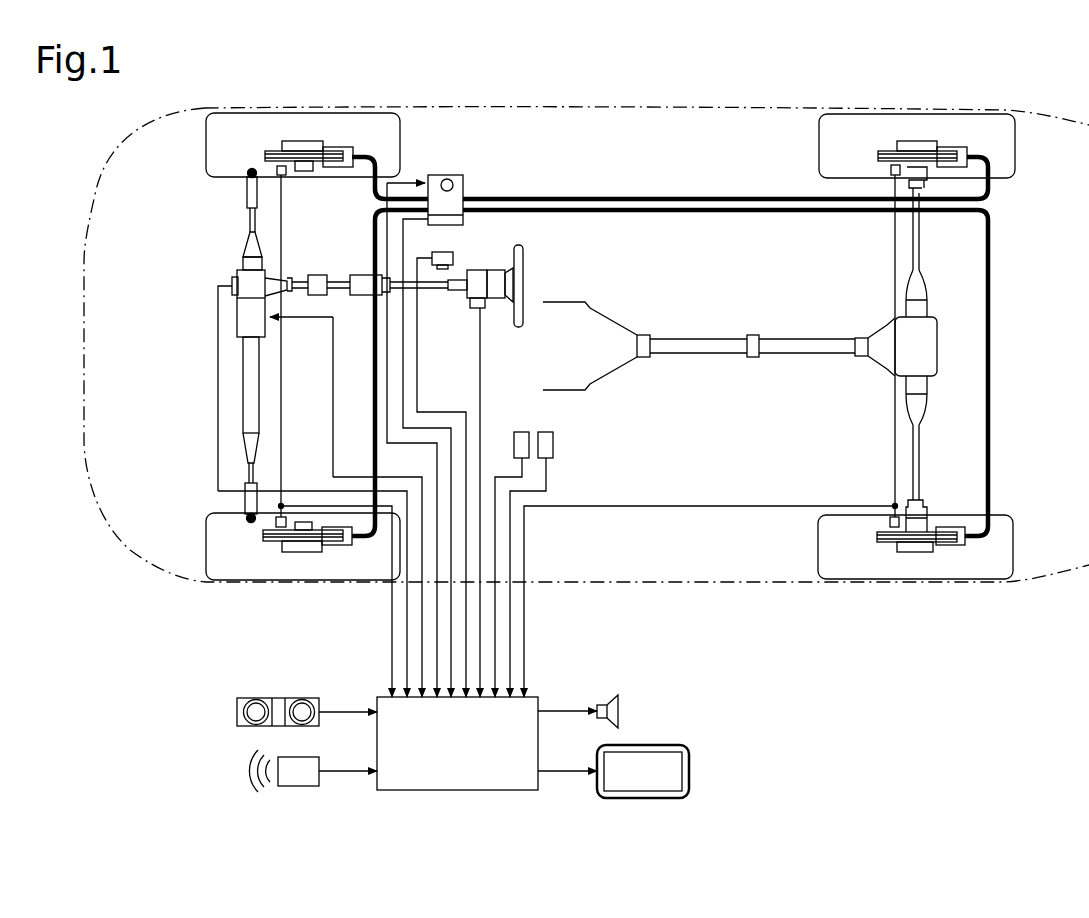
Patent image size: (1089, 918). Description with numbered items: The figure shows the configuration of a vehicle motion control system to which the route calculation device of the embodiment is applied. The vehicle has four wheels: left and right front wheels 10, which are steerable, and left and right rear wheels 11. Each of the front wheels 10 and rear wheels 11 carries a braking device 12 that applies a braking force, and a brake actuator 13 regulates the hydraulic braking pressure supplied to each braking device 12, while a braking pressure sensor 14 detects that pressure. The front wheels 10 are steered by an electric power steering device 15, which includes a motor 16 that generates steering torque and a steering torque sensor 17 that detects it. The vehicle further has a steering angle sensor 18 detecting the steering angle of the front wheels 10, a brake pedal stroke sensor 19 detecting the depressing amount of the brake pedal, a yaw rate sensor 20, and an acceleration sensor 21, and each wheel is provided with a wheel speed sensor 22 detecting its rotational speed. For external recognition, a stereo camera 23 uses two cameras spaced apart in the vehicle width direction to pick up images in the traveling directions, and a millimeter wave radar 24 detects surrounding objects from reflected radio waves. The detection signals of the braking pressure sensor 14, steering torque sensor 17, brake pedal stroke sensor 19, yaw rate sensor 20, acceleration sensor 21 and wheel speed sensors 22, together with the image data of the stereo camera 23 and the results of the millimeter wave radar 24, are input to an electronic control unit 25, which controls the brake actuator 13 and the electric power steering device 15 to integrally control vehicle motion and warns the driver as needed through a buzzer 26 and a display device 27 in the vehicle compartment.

The front wheels 10 is at (244, 113).
The rear wheels 11 is at (862, 114).
The braking devices 12 is at (337, 141).
The brake actuator 13 is at (445, 177).
The braking pressure sensor 14 is at (450, 224).
The electric power steering device 15 is at (240, 368).
The motor 16 is at (237, 322).
The steering torque sensor 17 is at (232, 286).
The steering angle sensor 18 is at (478, 306).
The brake pedal stroke sensor 19 is at (453, 256).
The yaw rate sensor 20 is at (523, 432).
The acceleration sensor 21 is at (546, 435).
The wheel speed sensors 22 is at (277, 170).
The stereo camera 23 is at (263, 700).
The millimeter wave radar 24 is at (302, 788).
The electronic control unit 25 is at (490, 791).
The buzzer 26 is at (602, 702).
The display device 27 is at (641, 745).